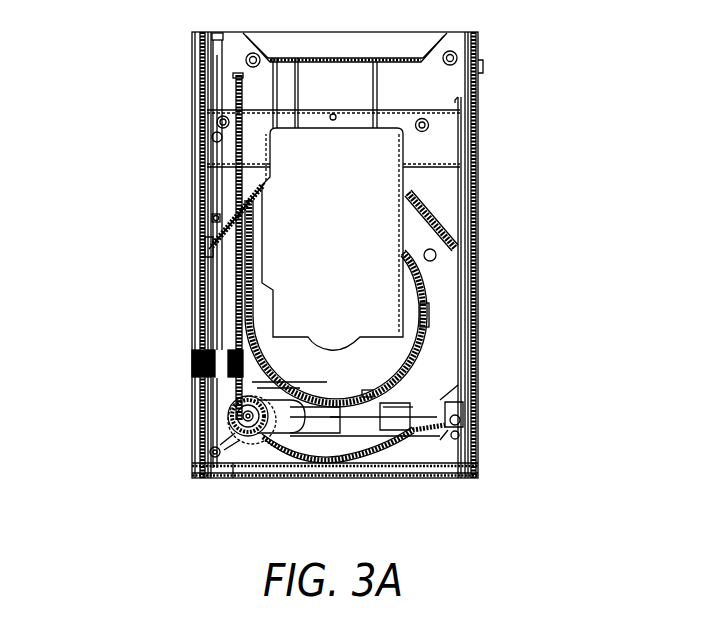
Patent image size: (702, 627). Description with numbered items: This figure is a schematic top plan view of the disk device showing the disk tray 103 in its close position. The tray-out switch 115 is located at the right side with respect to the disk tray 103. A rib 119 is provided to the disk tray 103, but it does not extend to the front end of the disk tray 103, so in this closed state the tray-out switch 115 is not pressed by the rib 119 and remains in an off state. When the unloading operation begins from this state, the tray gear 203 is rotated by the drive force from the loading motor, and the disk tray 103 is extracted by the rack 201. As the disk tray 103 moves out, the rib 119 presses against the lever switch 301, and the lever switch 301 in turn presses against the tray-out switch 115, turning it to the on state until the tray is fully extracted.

The disk tray 103 is at (433, 84).
The rib 119 is at (448, 212).
The rack 201 is at (237, 265).
The tray gear 203 is at (258, 438).
The lever switch 301 is at (452, 430).
The tray-out switch 115 is at (458, 402).